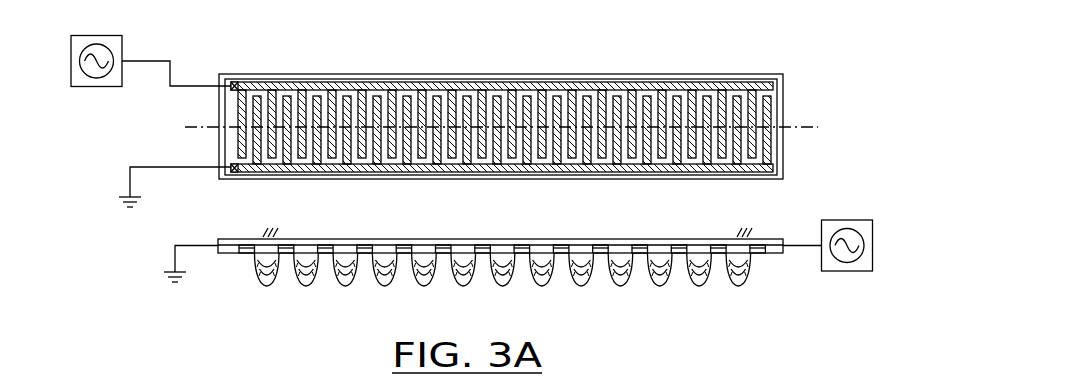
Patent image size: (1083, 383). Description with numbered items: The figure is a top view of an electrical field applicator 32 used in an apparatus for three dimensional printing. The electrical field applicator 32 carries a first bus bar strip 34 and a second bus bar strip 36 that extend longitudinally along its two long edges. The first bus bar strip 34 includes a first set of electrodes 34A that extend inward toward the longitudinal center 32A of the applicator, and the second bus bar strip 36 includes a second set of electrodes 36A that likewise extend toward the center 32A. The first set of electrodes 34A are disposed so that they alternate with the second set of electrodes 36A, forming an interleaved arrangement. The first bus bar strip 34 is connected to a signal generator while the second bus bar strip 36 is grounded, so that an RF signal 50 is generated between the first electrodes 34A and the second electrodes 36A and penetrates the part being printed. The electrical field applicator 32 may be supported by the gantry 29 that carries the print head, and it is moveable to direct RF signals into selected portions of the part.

The gantry 29 is at (262, 233).
The electrical field applicator 32 is at (232, 257).
The longitudinal center 32A is at (795, 113).
The first bus bar strip 34 is at (743, 172).
The first set of electrodes 34A is at (433, 95).
The second bus bar strip 36 is at (672, 82).
The second set of electrodes 36A is at (443, 197).
The RF signal 50 is at (347, 304).